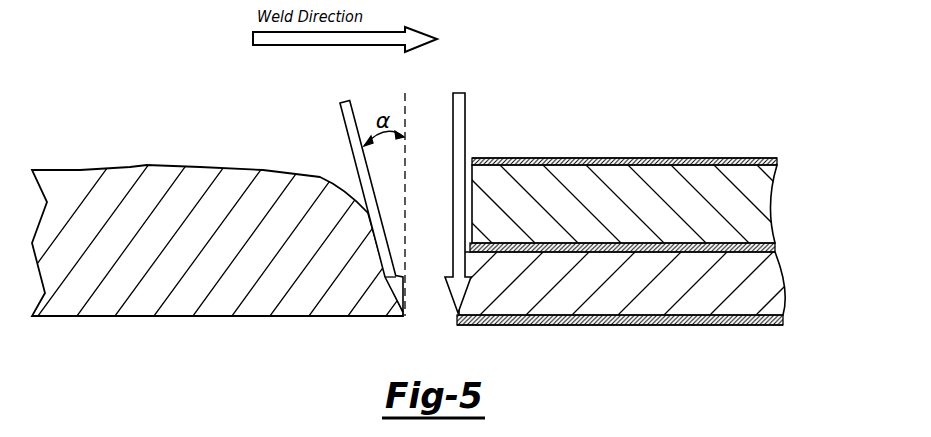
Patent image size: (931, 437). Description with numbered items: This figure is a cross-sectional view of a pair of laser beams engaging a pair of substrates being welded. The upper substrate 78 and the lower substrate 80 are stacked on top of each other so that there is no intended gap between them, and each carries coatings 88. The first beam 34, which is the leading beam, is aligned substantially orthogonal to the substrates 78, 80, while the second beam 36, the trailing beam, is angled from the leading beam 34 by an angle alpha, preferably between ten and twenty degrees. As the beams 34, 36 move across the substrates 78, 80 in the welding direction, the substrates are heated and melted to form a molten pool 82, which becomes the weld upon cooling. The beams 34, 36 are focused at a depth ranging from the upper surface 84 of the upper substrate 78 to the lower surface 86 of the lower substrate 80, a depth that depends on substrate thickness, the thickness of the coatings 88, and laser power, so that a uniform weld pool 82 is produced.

The first beam 34 is at (466, 122).
The second beam 36 is at (341, 130).
The upper substrate 78 is at (762, 215).
The lower substrate 80 is at (775, 289).
The molten pool 82 is at (106, 180).
The upper surface 84 is at (553, 158).
The lower surface 86 is at (547, 326).
The coatings 88 is at (777, 162).